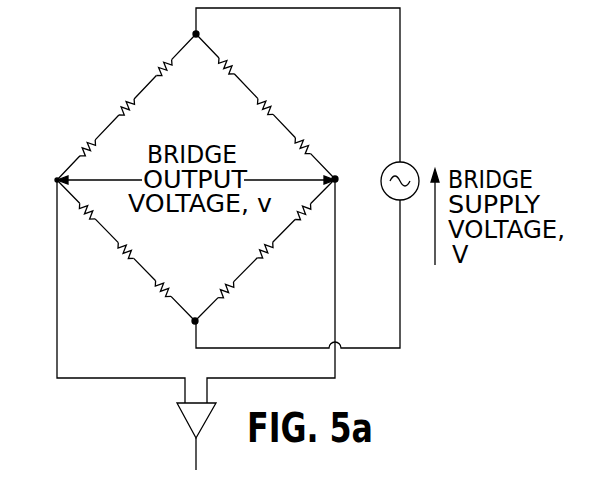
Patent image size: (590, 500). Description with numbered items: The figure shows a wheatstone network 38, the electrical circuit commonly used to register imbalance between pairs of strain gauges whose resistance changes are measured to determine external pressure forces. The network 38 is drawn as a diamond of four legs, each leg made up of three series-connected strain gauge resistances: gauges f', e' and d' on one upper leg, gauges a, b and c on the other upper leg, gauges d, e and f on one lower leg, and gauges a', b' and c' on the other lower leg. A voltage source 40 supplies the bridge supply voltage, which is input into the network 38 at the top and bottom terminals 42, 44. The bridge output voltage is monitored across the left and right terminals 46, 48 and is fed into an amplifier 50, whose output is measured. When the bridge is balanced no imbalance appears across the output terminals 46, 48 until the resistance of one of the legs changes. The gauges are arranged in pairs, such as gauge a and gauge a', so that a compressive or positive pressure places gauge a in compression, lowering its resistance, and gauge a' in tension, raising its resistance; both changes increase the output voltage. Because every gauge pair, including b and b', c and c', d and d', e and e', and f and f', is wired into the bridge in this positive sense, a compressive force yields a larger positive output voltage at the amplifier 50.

The wheatstone network 38 is at (129, 57).
The voltage source 40 is at (413, 167).
The terminal 42 is at (199, 36).
The terminal 44 is at (194, 322).
The terminal 46 is at (57, 176).
The terminal 48 is at (336, 177).
The amplifier 50 is at (182, 420).
The strain gauge a is at (242, 60).
The strain gauge b is at (280, 95).
The strain gauge c is at (312, 125).
The strain gauge d is at (81, 229).
The strain gauge e is at (113, 265).
The strain gauge f is at (148, 298).
The strain gauge a' is at (242, 300).
The strain gauge b' is at (279, 264).
The strain gauge c' is at (309, 228).
The strain gauge d' is at (85, 125).
The strain gauge e' is at (118, 92).
The strain gauge f' is at (153, 54).